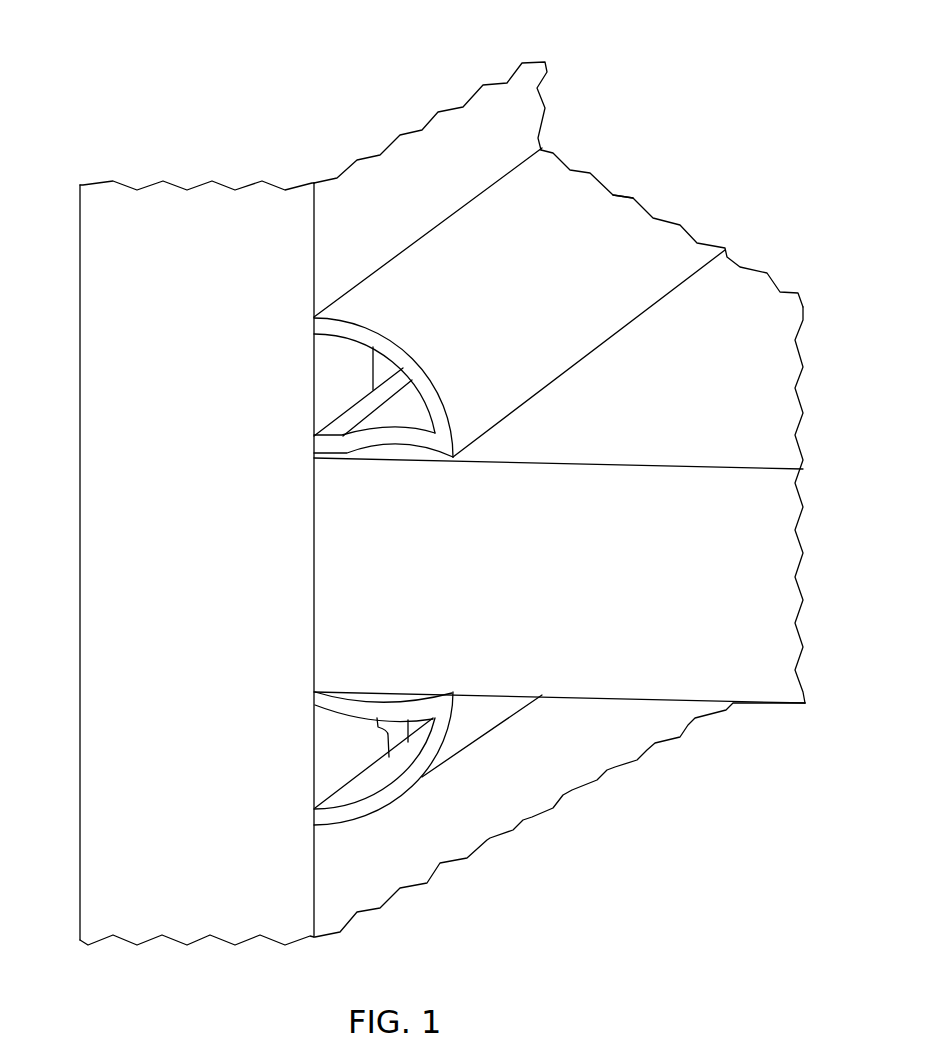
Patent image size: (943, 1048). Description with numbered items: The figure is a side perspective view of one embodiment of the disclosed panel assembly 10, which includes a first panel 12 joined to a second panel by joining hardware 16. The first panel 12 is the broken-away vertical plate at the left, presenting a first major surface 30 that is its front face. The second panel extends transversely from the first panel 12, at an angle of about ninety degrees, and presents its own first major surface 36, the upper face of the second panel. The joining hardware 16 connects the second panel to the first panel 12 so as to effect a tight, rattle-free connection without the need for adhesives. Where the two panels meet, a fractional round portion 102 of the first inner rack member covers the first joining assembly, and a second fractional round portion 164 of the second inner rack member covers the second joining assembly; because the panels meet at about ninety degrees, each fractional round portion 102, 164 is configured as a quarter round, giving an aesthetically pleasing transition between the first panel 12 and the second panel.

The panel assembly 10 is at (559, 474).
The first panel 12 is at (92, 303).
The joining hardware 16 is at (559, 499).
The first major surface 30 is at (437, 193).
The first major surface 36 is at (724, 390).
The fractional round portion 102 is at (617, 212).
The fractional round portion 164 is at (481, 727).